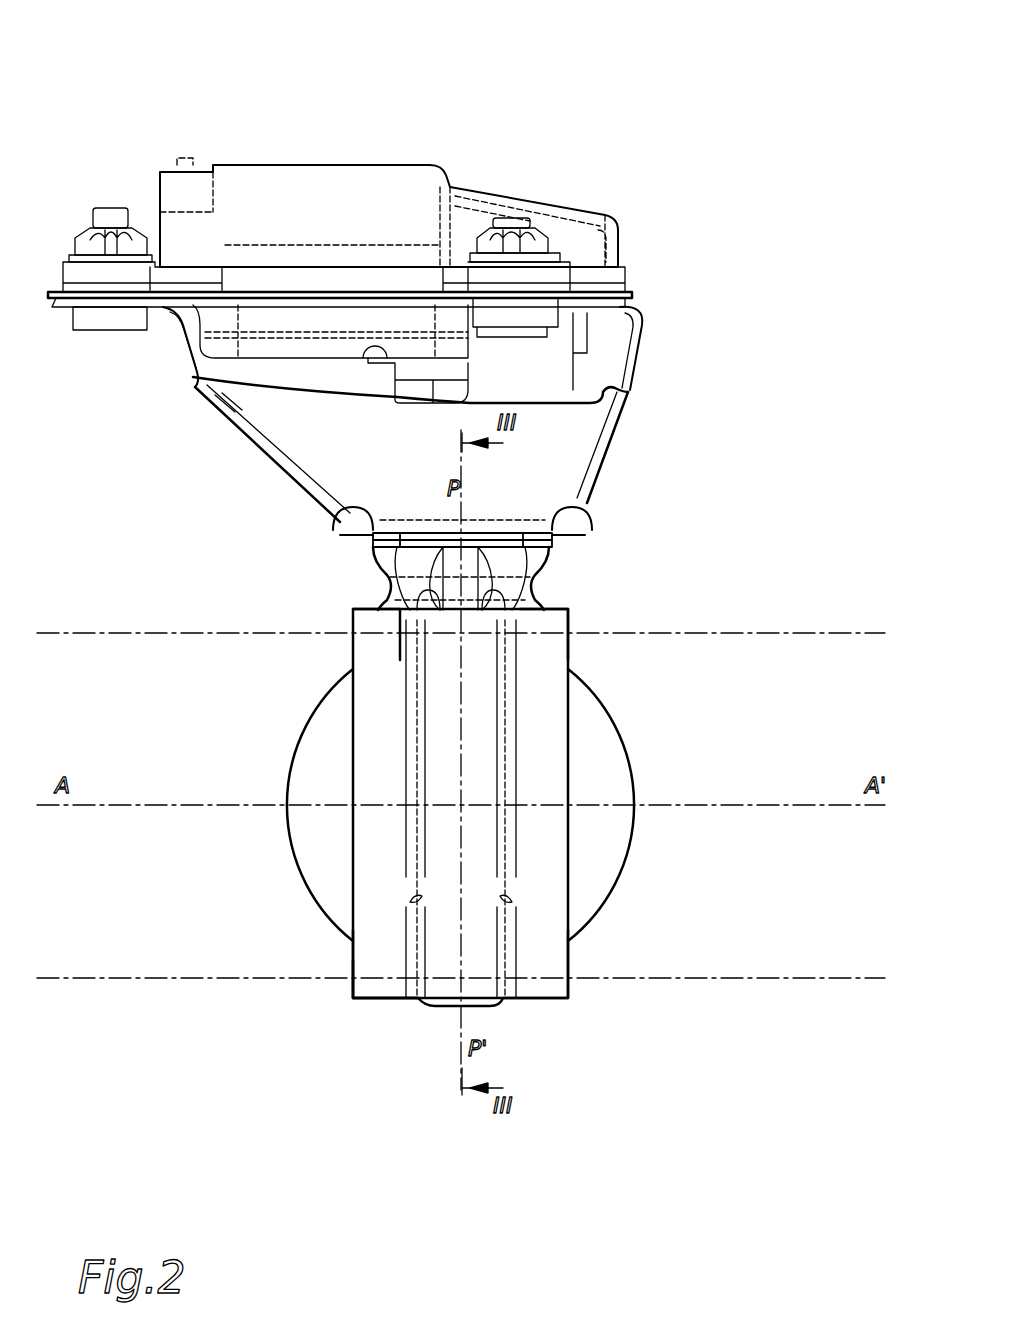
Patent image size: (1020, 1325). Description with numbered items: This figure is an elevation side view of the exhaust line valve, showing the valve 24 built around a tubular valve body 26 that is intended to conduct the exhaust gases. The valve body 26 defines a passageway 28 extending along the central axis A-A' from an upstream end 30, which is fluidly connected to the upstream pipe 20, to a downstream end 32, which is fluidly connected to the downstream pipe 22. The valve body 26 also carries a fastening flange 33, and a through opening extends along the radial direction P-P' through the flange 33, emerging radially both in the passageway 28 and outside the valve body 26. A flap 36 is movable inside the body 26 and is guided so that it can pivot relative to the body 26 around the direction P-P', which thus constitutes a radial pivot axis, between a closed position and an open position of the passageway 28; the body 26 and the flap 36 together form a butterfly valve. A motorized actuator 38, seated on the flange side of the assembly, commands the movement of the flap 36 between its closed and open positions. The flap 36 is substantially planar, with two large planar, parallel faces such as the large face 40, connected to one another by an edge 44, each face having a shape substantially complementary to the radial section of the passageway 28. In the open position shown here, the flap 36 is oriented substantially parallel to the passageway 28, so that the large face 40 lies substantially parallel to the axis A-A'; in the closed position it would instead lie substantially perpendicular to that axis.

The upstream pipe 20 is at (846, 648).
The downstream pipe 22 is at (70, 648).
The valve 24 is at (395, 269).
The tubular valve body 26 is at (388, 975).
The passageway 28 is at (590, 955).
The upstream end 30 is at (570, 655).
The downstream end 32 is at (350, 655).
The fastening flange 33 is at (565, 580).
The flap 36 is at (595, 722).
The motorized actuator 38 is at (660, 238).
The large face 40 is at (595, 845).
The edge 44 is at (303, 873).